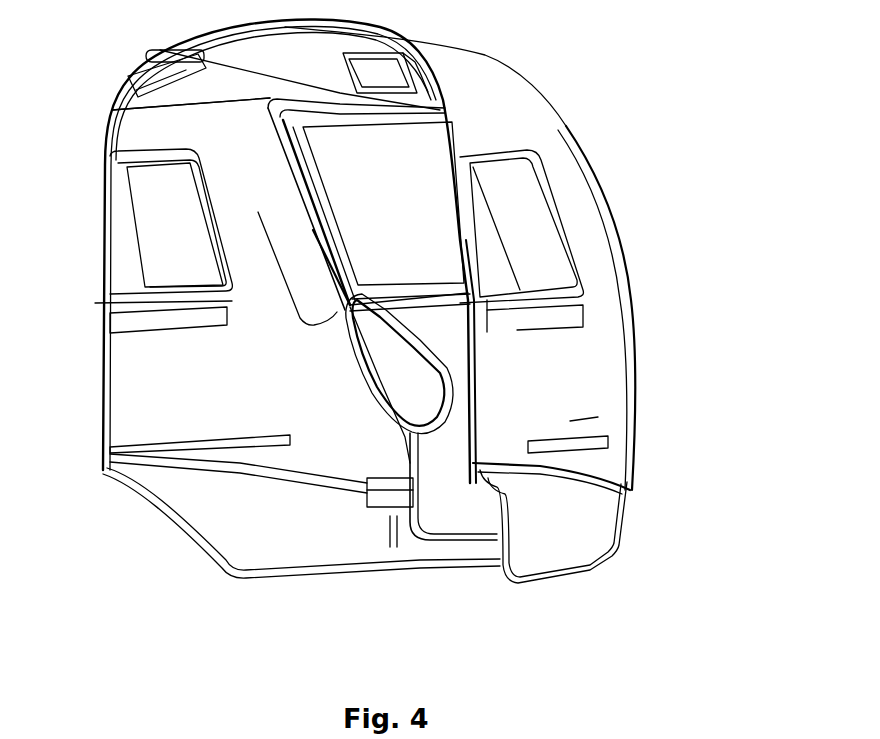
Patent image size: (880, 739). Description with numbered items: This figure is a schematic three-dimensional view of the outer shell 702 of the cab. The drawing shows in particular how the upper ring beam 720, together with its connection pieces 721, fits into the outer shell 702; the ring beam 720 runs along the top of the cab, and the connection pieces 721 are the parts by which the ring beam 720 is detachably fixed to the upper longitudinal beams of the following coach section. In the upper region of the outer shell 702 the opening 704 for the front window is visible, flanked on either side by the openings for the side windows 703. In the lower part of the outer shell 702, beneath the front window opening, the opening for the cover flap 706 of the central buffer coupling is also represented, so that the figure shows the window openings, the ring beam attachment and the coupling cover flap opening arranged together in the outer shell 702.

The outer shell 702 is at (652, 386).
The side windows 703 is at (157, 220).
The opening for the front window 704 is at (417, 145).
The cover flap 706 is at (470, 507).
The ring beam 720 is at (223, 77).
The connection piece 721 is at (127, 73).